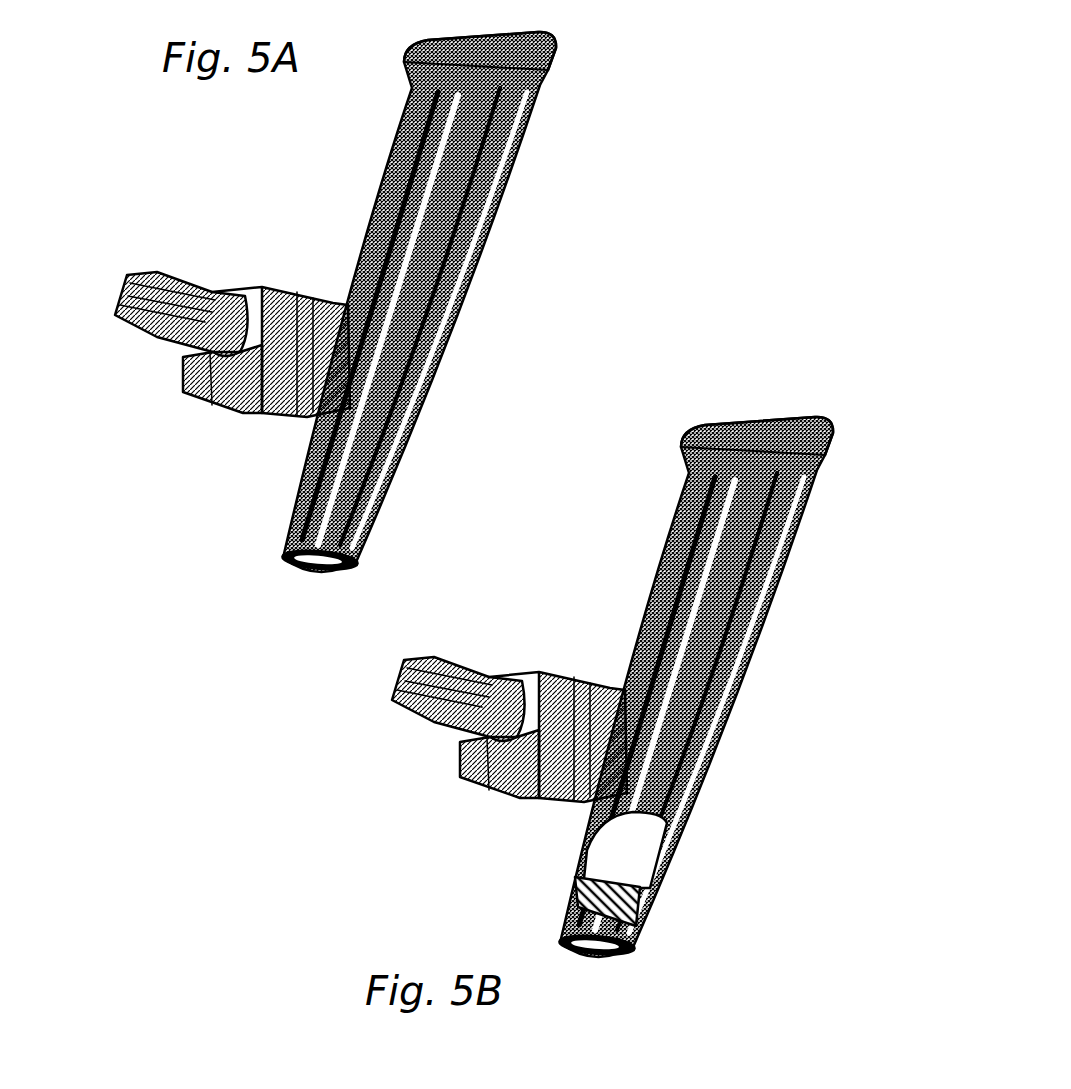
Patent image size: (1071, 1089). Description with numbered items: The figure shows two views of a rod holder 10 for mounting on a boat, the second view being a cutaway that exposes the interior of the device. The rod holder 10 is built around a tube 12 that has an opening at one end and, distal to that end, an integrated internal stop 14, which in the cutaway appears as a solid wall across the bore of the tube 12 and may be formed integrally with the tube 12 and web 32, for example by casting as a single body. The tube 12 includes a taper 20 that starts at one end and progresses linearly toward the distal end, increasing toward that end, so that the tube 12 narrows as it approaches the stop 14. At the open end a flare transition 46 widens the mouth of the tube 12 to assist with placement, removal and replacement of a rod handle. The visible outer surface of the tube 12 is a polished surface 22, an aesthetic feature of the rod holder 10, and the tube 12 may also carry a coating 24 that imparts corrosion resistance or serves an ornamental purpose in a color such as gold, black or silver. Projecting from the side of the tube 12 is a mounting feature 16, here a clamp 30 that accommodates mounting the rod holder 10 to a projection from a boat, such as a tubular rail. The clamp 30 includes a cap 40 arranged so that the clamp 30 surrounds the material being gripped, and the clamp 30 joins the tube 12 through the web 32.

In FIG. 5A, the rod holder 10 is at (650, 500).
In FIG. 5A, the tube 12 is at (524, 98).
In FIG. 5B, the tube 12 is at (793, 478).
In FIG. 5B, the internal stop 14 is at (573, 882).
In FIG. 5A, the mounting feature 16 is at (188, 427).
In FIG. 5B, the mounting feature 16 is at (422, 779).
In FIG. 5A, the taper 20 is at (273, 423).
In FIG. 5B, the taper 20 is at (793, 963).
In FIG. 5A, the polished surface 22 is at (420, 158).
In FIG. 5B, the polished surface 22 is at (696, 567).
In FIG. 5A, the coating 24 is at (397, 473).
In FIG. 5B, the coating 24 is at (643, 927).
In FIG. 5A, the clamp 30 is at (210, 262).
In FIG. 5B, the clamp 30 is at (482, 655).
In FIG. 5A, the web 32 is at (317, 300).
In FIG. 5B, the web 32 is at (597, 700).
In FIG. 5A, the cap 40 is at (193, 373).
In FIG. 5B, the cap 40 is at (460, 747).
In FIG. 5A, the flare transition 46 is at (566, 30).
In FIG. 5B, the flare transition 46 is at (833, 413).